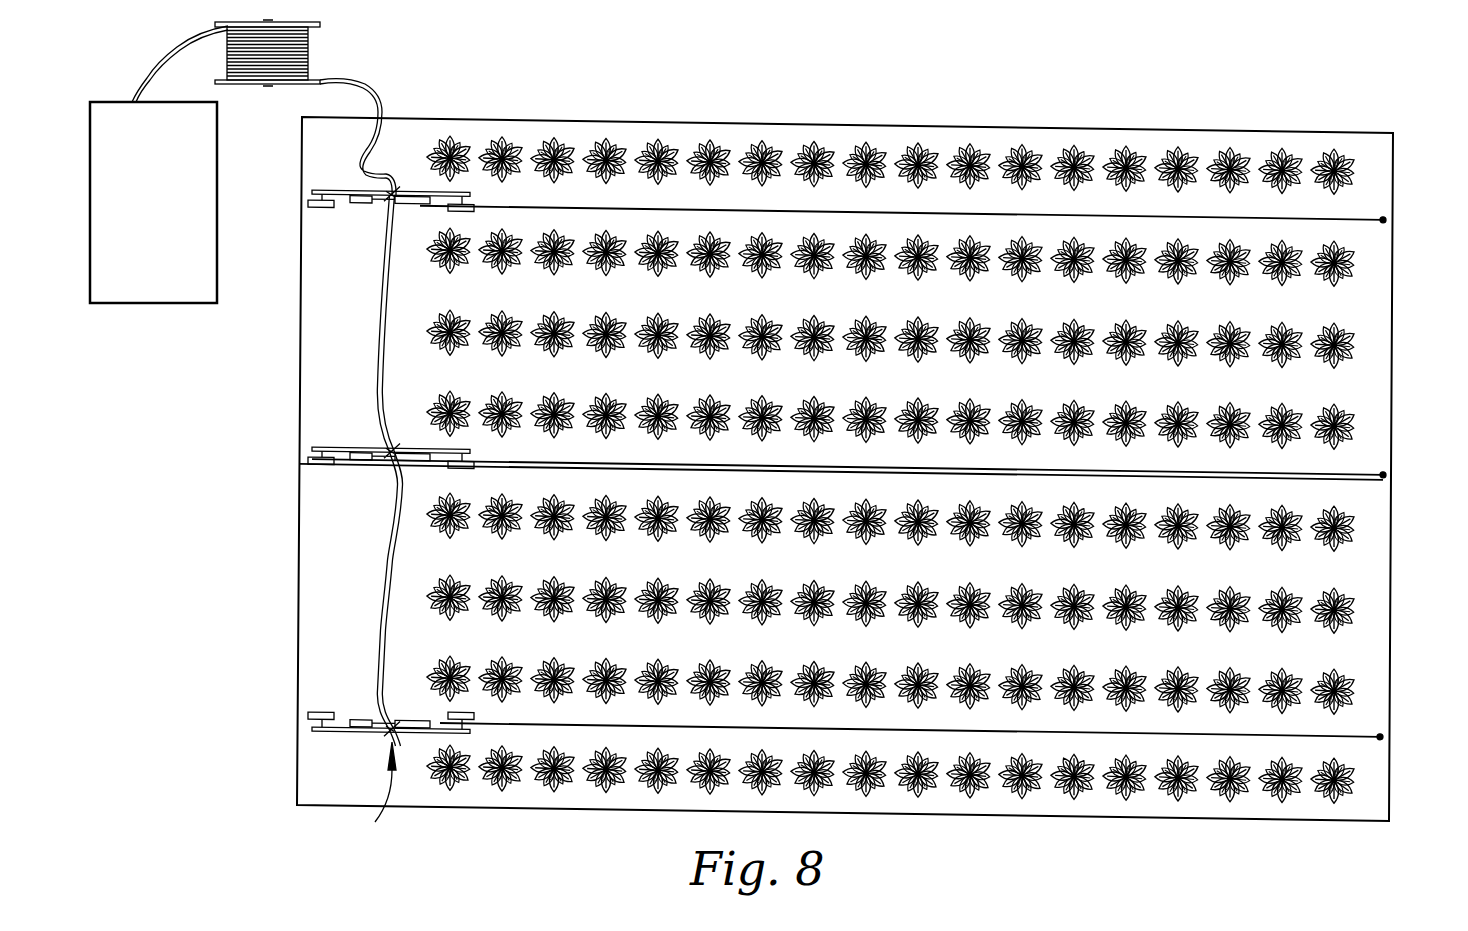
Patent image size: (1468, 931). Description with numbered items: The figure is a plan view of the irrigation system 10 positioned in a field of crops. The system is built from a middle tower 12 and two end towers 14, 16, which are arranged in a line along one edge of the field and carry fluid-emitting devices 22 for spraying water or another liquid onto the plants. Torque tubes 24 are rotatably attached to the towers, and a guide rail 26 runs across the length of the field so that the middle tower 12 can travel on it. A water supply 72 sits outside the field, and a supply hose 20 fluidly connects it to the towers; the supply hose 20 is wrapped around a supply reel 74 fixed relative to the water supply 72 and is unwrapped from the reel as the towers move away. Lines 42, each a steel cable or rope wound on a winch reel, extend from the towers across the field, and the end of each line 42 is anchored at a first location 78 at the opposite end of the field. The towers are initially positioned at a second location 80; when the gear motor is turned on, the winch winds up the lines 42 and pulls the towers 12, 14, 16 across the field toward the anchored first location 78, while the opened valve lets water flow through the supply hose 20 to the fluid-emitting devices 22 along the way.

The irrigation system 10 is at (354, 553).
The middle tower 12 is at (340, 447).
The end tower 14 is at (337, 731).
The end tower 16 is at (327, 190).
The supply hose 20 is at (382, 96).
The fluid-emitting device 22 is at (377, 386).
The torque tube 24 is at (400, 370).
The guide rail 26 is at (1300, 463).
The line 42 is at (796, 203).
The water supply 72 is at (135, 300).
The supply reel 74 is at (321, 28).
The first location 78 is at (1383, 204).
The second location 80 is at (364, 802).